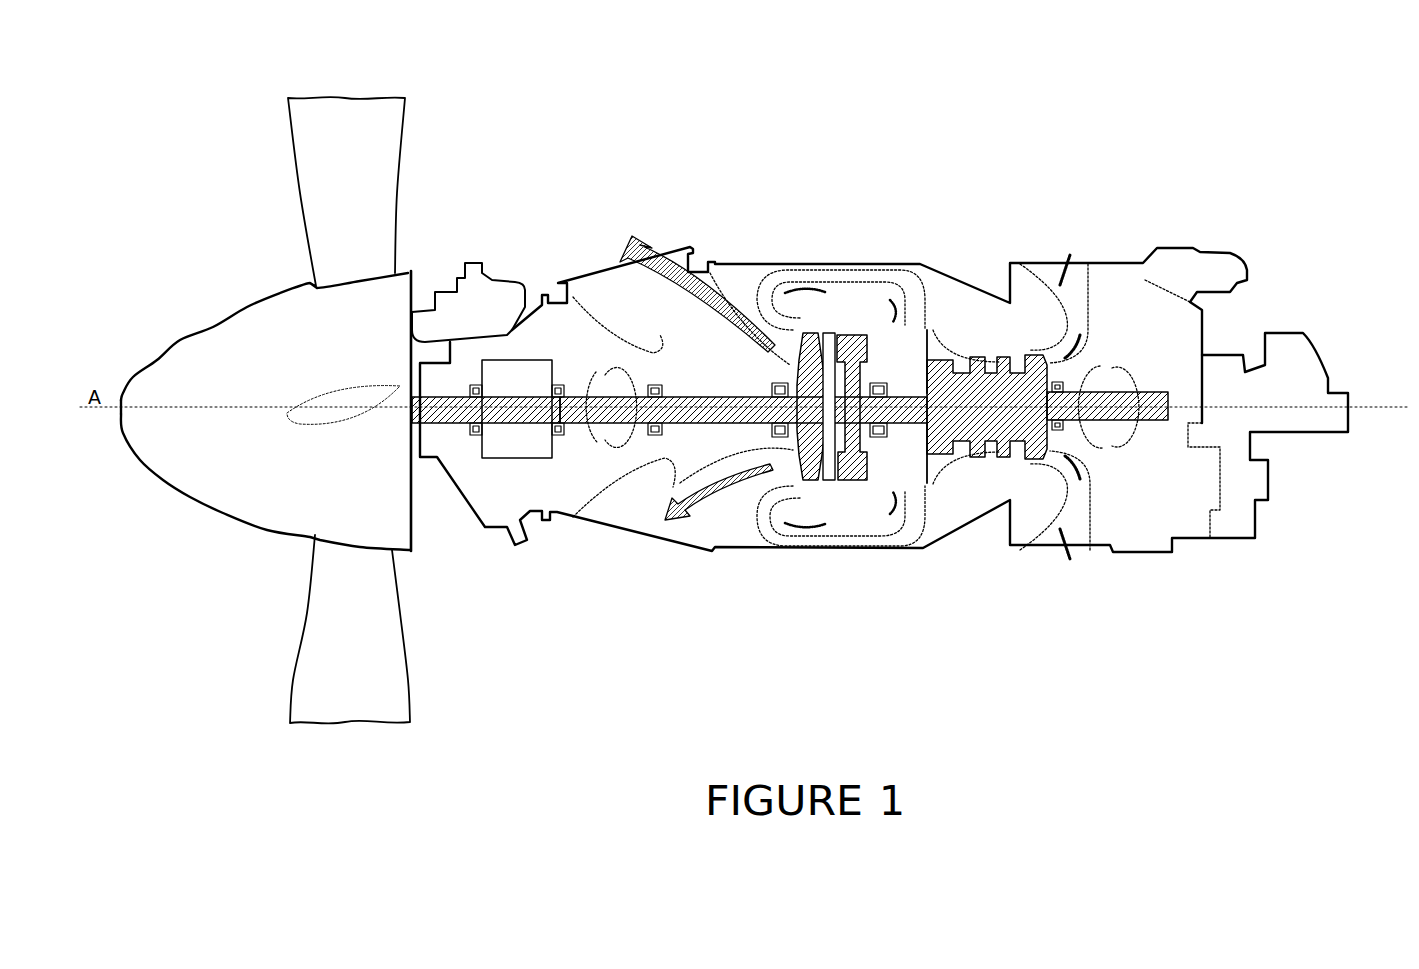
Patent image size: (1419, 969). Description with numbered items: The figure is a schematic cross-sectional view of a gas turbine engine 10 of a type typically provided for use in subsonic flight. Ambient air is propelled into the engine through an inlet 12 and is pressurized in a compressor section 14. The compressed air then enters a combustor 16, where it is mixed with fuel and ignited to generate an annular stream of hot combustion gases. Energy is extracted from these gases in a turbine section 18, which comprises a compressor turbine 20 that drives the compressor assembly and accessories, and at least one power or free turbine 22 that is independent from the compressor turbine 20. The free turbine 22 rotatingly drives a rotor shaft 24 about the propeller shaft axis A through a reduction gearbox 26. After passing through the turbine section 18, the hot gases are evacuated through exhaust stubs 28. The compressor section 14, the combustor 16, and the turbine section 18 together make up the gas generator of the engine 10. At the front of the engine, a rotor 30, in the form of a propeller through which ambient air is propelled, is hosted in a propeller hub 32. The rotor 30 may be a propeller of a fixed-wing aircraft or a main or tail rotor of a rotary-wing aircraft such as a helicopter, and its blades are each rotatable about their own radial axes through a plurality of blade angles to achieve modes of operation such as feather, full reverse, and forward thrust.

The gas turbine engine 10 is at (742, 162).
The inlet 12 is at (1068, 248).
The compressor section 14 is at (965, 300).
The combustor 16 is at (860, 293).
The turbine section 18 is at (834, 410).
The compressor turbine 20 is at (847, 407).
The free turbine 22 is at (827, 407).
The rotor shaft 24 is at (535, 447).
The reduction gearbox 26 is at (517, 409).
The exhaust stubs 28 is at (606, 243).
The rotor 30 is at (317, 167).
The propeller hub 32 is at (242, 326).